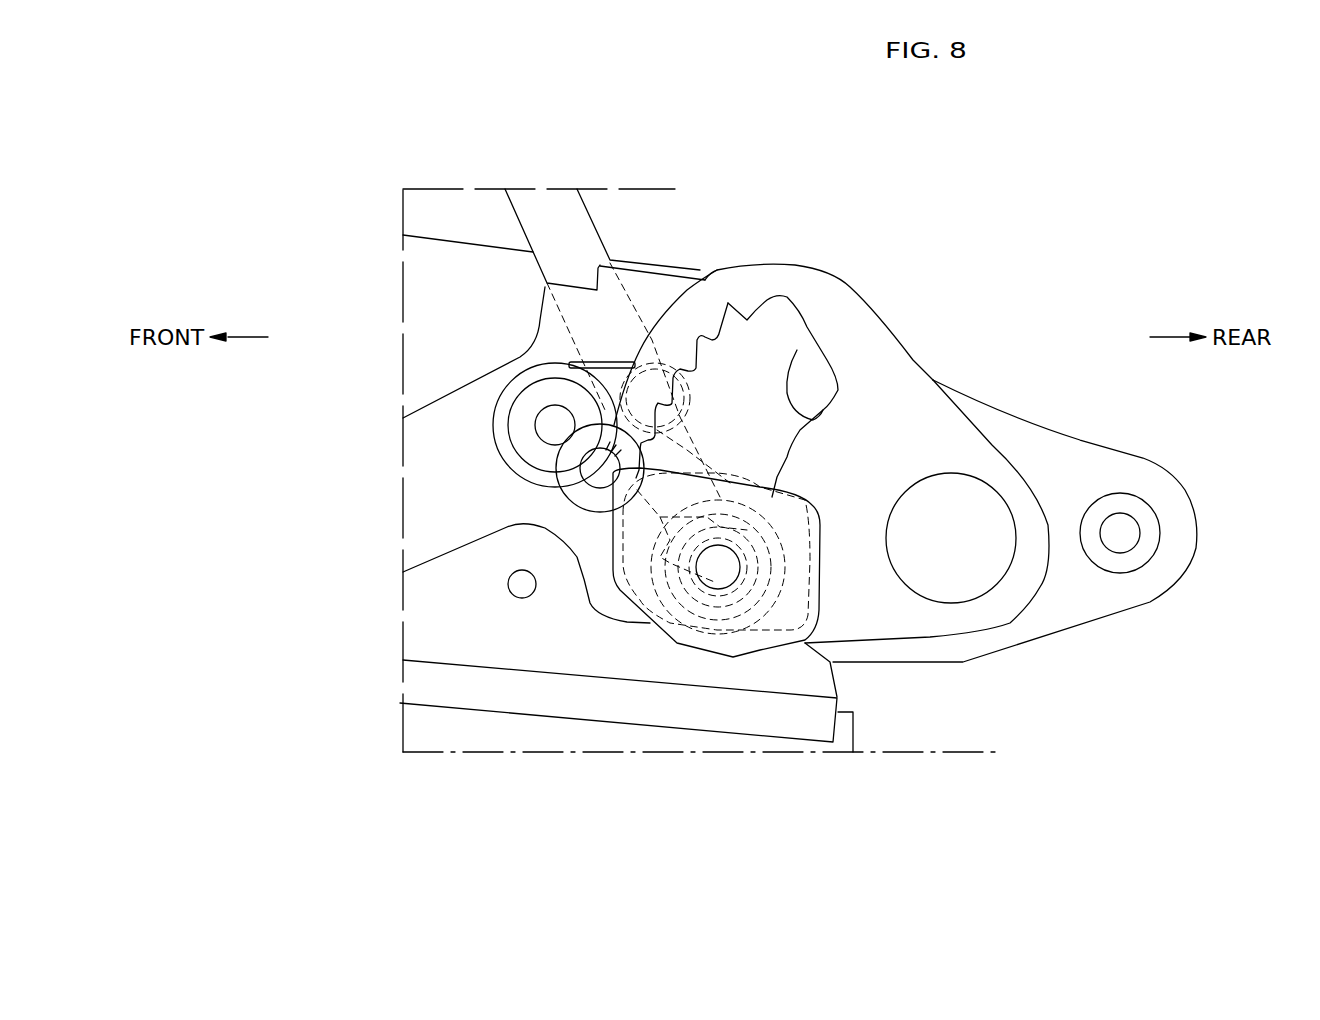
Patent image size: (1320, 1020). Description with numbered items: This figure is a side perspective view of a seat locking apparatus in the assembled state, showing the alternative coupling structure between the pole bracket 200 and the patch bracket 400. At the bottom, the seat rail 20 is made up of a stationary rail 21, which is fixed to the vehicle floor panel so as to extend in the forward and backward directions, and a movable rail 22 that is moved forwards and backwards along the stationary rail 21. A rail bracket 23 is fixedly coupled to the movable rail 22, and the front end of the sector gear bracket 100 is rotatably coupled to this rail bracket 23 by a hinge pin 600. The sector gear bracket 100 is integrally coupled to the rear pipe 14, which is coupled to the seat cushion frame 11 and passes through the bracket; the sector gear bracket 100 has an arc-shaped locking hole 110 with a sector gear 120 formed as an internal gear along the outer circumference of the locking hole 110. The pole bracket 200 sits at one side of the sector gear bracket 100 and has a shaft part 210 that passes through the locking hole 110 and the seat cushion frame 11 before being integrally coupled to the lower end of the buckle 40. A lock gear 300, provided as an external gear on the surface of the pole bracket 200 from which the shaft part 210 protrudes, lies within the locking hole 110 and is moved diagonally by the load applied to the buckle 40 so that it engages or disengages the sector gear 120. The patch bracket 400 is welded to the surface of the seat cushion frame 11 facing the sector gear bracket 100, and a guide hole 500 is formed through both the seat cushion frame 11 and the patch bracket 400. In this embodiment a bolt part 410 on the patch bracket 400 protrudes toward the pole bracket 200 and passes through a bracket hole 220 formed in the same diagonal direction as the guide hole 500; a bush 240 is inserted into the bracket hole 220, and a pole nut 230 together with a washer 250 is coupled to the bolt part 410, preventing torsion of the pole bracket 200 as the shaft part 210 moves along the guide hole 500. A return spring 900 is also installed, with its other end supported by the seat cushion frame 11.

The seat cushion frame 11 is at (440, 283).
The rear pipe 14 is at (975, 520).
The seat rail 20 is at (626, 784).
The stationary rail 21 is at (690, 742).
The movable rail 22 is at (777, 713).
The rail bracket 23 is at (430, 632).
The buckle 40 is at (553, 203).
The sector gear bracket 100 is at (930, 432).
The locking hole 110 is at (797, 350).
The sector gear 120 is at (718, 315).
The pole bracket 200 is at (800, 618).
The shaft part 210 is at (740, 567).
The bracket hole 220 is at (572, 465).
The pole nut 230 is at (533, 400).
The bush 240 is at (610, 488).
The washer 250 is at (535, 375).
The lock gear 300 is at (670, 537).
The patch bracket 400 is at (520, 478).
The bolt part 410 is at (555, 425).
The guide hole 500 is at (712, 510).
The hinge pin 600 is at (522, 598).
The return spring 900 is at (613, 360).